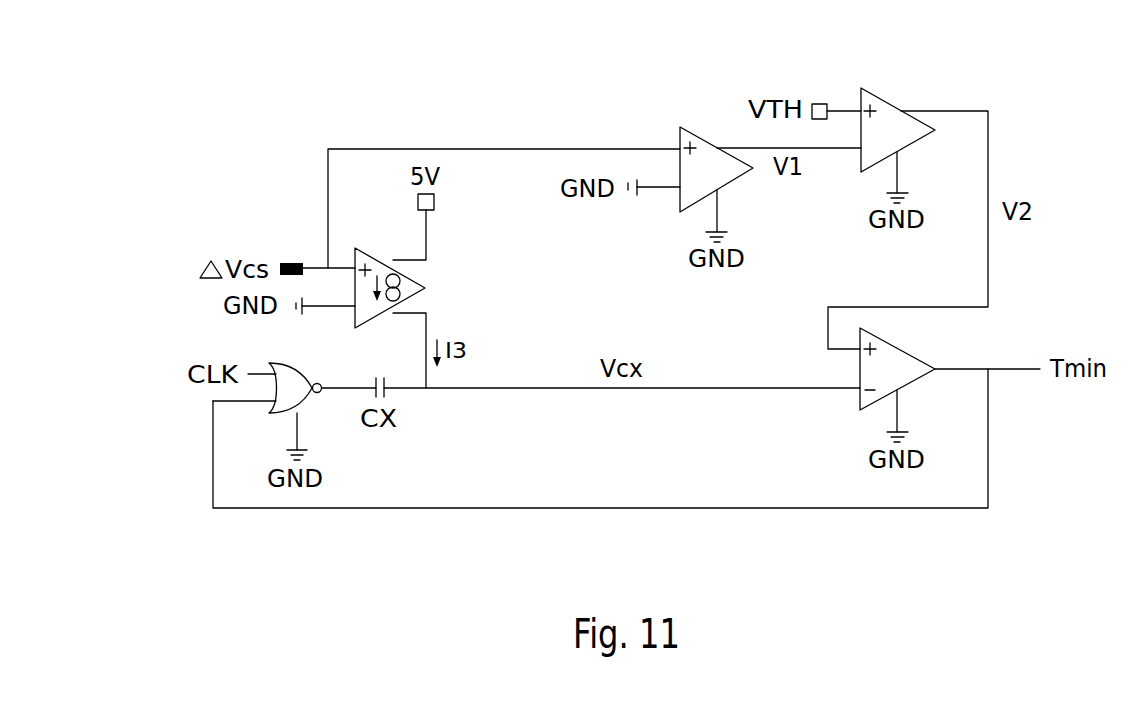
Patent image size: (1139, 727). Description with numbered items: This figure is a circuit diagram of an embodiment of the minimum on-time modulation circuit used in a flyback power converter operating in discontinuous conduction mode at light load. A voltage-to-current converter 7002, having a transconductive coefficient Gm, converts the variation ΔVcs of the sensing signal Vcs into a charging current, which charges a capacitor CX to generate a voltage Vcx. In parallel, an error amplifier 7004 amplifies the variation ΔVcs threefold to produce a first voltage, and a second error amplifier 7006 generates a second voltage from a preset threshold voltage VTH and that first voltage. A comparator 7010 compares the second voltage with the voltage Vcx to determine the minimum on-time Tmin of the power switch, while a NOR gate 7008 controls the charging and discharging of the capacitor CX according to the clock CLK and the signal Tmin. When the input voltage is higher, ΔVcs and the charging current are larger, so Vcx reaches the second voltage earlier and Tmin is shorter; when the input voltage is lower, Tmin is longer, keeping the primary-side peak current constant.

The voltage-to-current converter 7002 is at (364, 249).
The error amplifier 7004 is at (700, 135).
The error amplifier 7006 is at (880, 90).
The NOR gate 7008 is at (308, 398).
The comparator 7010 is at (858, 402).